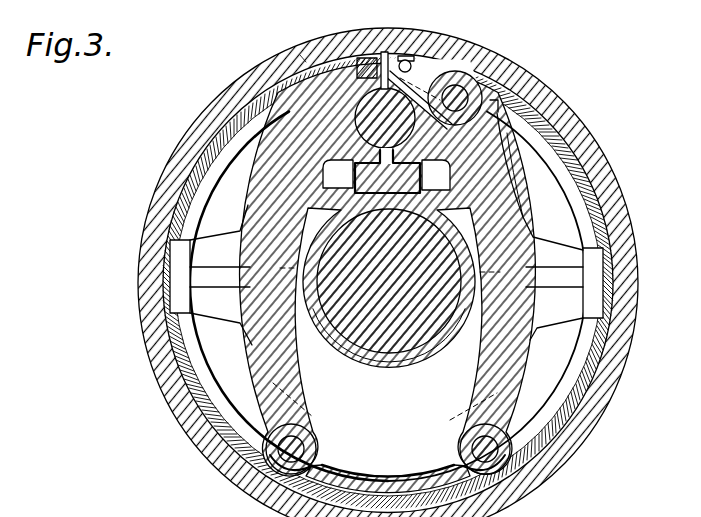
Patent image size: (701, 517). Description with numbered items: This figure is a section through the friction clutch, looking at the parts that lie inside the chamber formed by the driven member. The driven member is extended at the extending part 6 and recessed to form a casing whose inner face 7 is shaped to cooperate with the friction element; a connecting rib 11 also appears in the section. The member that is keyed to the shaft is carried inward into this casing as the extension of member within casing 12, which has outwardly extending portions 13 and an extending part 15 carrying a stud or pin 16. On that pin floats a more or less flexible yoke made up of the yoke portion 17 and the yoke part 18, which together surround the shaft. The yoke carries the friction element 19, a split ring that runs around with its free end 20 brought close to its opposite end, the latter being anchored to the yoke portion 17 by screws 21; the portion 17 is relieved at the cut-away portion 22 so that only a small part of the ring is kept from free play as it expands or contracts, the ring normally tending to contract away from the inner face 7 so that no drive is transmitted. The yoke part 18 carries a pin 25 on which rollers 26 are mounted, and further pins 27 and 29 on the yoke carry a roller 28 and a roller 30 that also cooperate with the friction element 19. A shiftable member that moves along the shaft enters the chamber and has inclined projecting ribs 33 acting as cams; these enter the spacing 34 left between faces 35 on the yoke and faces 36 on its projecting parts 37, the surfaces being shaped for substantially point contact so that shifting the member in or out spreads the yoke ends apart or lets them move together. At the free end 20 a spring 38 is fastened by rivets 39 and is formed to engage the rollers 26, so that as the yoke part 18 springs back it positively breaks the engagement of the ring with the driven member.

The extending part 6 is at (622, 232).
The inner face 7 is at (400, 338).
The connecting rib 11 is at (548, 250).
The extension of member within casing 12 is at (523, 217).
The outwardly extending portions 13 is at (177, 275).
The extending part 15 is at (350, 148).
The stud or pin 16 is at (430, 97).
The yoke portion 17 is at (278, 200).
The yoke part 18 is at (494, 190).
The friction element 19 is at (317, 58).
The free end 20 is at (394, 55).
The screws 21 is at (366, 56).
The cut-away portion 22 is at (302, 58).
The pin 25 is at (483, 82).
The rollers 26 is at (457, 94).
The pin 27 is at (492, 460).
The roller 28 is at (484, 438).
The pin 29 is at (282, 470).
The roller 30 is at (265, 452).
The projecting ribs 33 is at (337, 172).
The spacing 34 is at (502, 118).
The faces 35 is at (507, 133).
The faces 36 is at (560, 106).
The projecting parts 37 is at (335, 182).
The spring 38 is at (411, 70).
The rivets 39 is at (406, 58).